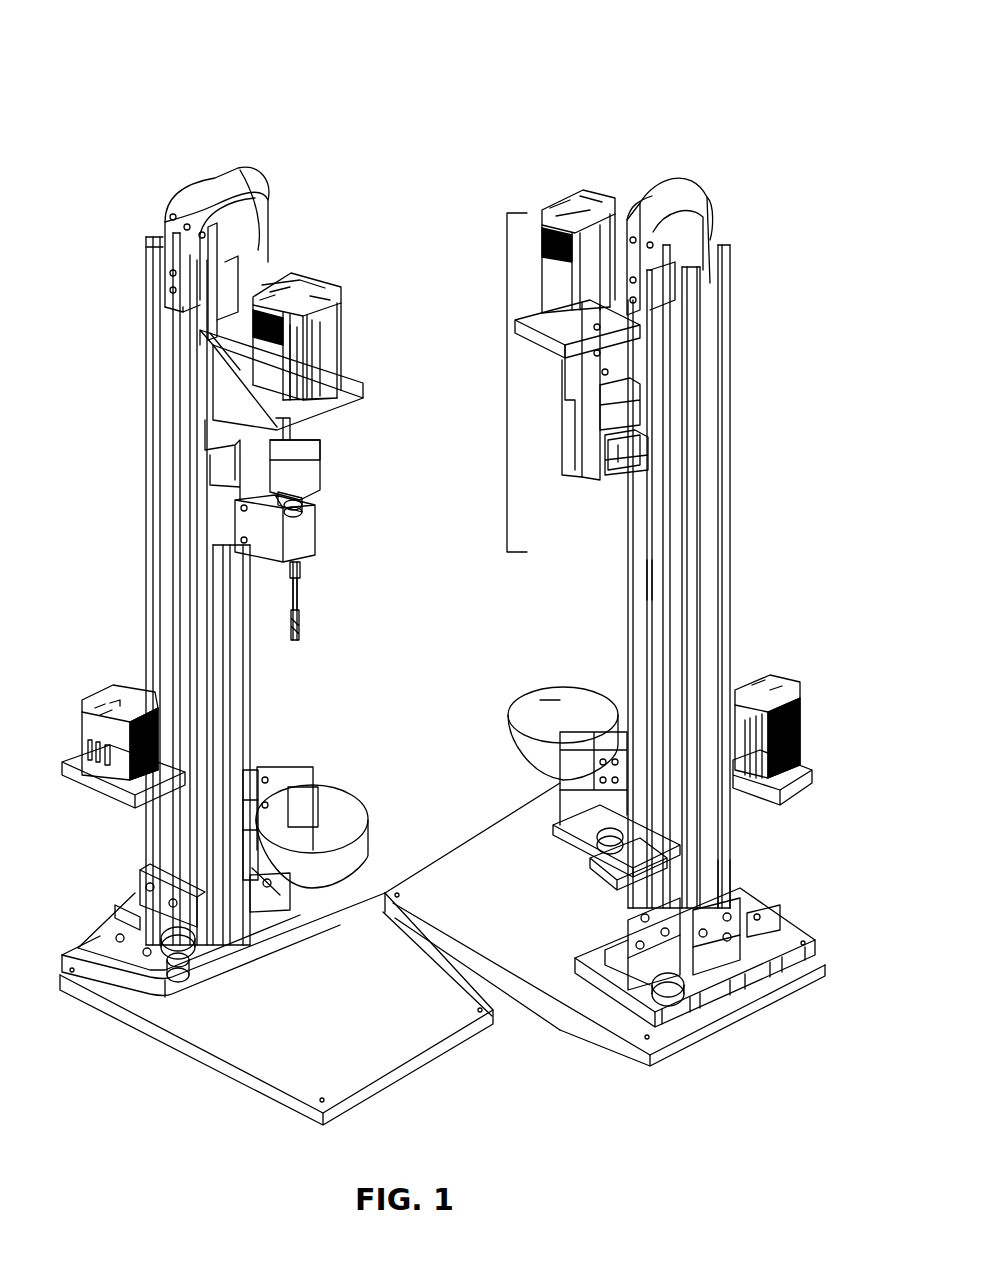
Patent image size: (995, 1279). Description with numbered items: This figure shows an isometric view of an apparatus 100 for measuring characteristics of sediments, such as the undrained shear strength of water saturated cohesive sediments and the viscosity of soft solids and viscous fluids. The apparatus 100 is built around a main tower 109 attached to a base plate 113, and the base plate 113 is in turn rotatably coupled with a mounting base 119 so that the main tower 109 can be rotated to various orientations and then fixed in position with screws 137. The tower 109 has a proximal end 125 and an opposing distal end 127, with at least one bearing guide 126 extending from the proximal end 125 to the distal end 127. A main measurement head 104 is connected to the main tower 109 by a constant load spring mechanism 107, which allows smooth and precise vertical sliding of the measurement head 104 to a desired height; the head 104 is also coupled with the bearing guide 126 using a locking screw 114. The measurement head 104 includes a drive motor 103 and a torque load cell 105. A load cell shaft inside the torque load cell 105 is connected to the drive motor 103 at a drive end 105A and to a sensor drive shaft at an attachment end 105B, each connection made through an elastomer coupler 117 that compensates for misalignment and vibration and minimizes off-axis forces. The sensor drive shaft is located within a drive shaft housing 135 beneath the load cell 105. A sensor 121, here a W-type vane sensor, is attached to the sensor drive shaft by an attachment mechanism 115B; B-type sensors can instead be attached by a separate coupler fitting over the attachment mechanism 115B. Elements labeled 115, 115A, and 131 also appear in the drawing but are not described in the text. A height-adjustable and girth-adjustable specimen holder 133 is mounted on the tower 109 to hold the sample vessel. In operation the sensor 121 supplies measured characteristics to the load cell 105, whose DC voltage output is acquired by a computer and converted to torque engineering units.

The apparatus 100 is at (150, 46).
The drive motor 103 is at (548, 233).
The main measurement head 104 is at (573, 387).
The torque load cell 105 is at (303, 475).
The drive end 105A is at (310, 448).
The attachment end 105B is at (293, 500).
The constant load spring mechanism 107 is at (240, 250).
The main tower 109 is at (632, 668).
The base plate 113 is at (110, 918).
The locking screw 114 is at (632, 470).
The probe 115 is at (297, 588).
The probe tip 115A is at (300, 612).
The attachment mechanism 115B is at (298, 568).
The coupler 117 is at (307, 505).
The mounting base 119 is at (560, 983).
The sensor 121 is at (298, 627).
The proximal end 125 is at (722, 345).
The bearing guide 126 is at (680, 553).
The distal end 127 is at (720, 880).
The motor 131 is at (95, 695).
The specimen holder 133 is at (520, 750).
The drive shaft housing 135 is at (308, 540).
The screws 137 is at (193, 949).